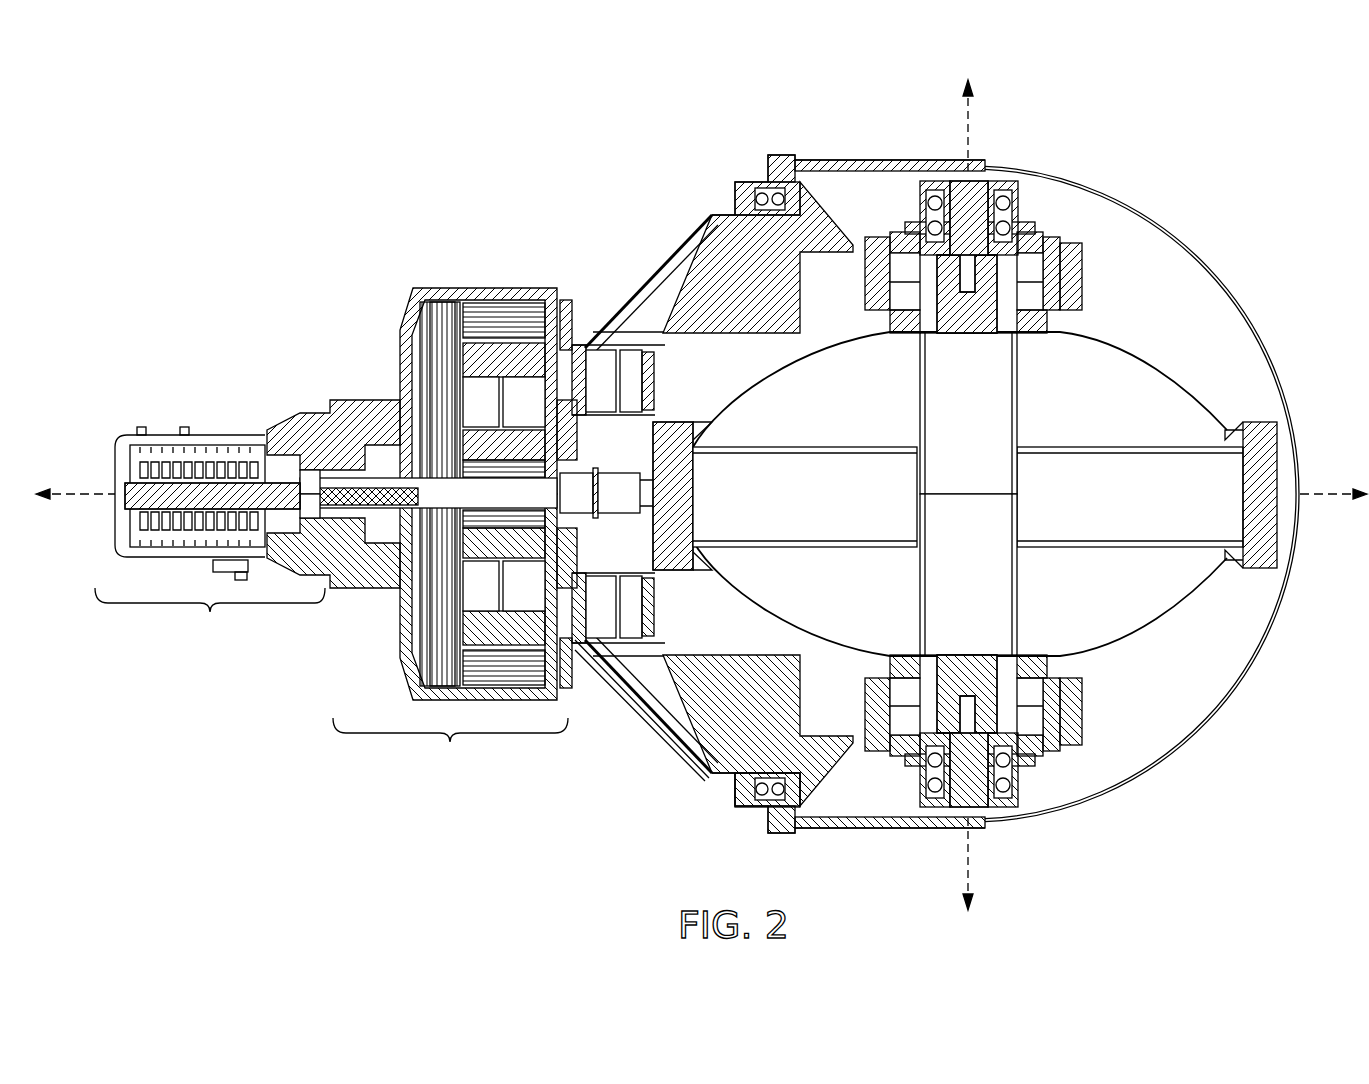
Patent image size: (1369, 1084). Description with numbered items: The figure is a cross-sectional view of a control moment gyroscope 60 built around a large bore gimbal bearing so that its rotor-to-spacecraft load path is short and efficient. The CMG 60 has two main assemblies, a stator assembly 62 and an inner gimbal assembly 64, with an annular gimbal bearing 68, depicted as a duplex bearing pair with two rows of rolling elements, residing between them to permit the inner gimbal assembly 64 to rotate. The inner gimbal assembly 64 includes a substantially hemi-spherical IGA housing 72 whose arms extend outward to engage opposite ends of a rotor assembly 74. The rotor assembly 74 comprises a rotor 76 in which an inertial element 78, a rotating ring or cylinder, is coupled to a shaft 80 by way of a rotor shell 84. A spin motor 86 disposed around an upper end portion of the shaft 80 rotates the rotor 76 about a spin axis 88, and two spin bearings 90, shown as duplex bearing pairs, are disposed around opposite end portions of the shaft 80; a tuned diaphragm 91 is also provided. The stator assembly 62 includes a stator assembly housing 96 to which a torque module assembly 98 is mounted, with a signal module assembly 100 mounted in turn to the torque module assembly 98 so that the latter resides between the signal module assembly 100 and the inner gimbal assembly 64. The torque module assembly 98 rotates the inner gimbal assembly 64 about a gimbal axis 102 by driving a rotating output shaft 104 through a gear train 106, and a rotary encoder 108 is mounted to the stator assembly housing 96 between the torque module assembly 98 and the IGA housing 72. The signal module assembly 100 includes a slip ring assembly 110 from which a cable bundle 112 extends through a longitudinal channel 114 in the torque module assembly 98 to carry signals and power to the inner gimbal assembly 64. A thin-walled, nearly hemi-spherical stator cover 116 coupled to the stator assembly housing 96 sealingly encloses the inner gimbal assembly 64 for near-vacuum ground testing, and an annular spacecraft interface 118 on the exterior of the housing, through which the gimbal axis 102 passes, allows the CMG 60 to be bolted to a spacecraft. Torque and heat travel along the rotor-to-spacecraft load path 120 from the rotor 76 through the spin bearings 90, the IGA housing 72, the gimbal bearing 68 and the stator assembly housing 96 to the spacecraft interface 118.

The control moment gyroscope 60 is at (1230, 192).
The stator assembly 62 is at (635, 268).
The inner gimbal assembly 64 is at (1095, 308).
The gimbal bearing 68 is at (745, 790).
The inner gimbal assembly housing 72 is at (700, 745).
The rotor assembly 74 is at (1115, 625).
The rotor 76 is at (842, 509).
The inertial element 78 is at (1258, 420).
The shaft 80 is at (975, 185).
The rotor shell 84 is at (745, 605).
The spin motor 86 is at (1010, 320).
The spin axis 88 is at (965, 138).
The spin bearings 90 is at (1008, 206).
The tuned diaphragm 91 is at (1065, 240).
The stator assembly housing 96 is at (640, 705).
The torque module assembly 98 is at (455, 531).
The signal module assembly 100 is at (210, 536).
The gimbal axis 102 is at (88, 486).
The rotating output shaft 104 is at (653, 465).
The gear train 106 is at (472, 322).
The rotary encoder 108 is at (605, 625).
The slip ring assembly 110 is at (190, 442).
The cable bundle 112 is at (328, 470).
The longitudinal channel 114 is at (392, 572).
The stator cover 116 is at (1248, 666).
The spacecraft interface 118 is at (783, 153).
The rotor-to-spacecraft load path 120 is at (723, 257).